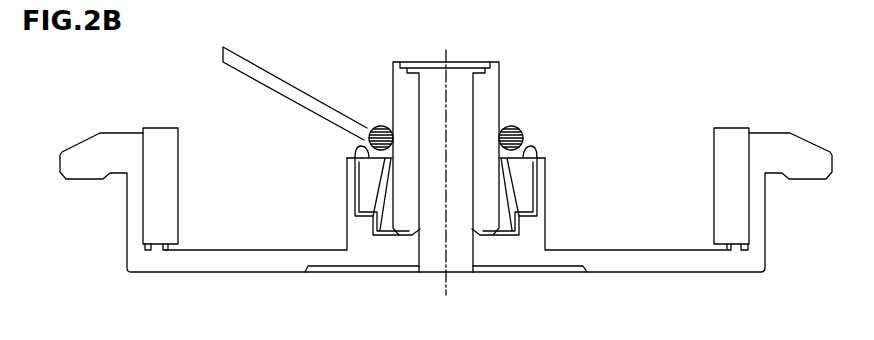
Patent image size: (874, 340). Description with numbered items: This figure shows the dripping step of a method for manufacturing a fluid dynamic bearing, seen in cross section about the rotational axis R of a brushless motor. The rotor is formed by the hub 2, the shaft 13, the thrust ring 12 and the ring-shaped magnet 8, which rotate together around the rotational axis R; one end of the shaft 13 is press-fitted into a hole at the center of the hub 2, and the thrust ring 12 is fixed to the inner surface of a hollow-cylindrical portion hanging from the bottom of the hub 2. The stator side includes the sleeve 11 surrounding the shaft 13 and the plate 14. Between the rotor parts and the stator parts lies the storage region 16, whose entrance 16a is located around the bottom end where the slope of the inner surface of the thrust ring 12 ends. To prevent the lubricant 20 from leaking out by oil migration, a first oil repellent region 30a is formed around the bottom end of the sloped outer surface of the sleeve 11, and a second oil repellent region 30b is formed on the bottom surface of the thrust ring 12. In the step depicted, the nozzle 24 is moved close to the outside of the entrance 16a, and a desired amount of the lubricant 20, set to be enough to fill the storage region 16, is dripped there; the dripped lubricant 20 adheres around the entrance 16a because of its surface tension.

The hub 2 is at (86, 143).
The ring-shaped magnet 8 is at (176, 148).
The sleeve 11 is at (397, 61).
The thrust ring 12 is at (362, 192).
The shaft 13 is at (432, 260).
The plate 14 is at (475, 63).
The storage region 16 is at (446, 231).
The entrance 16a is at (536, 164).
The lubricant 20 is at (452, 103).
The nozzle 24 is at (247, 67).
The first oil repellent region 30a is at (380, 124).
The second oil repellent region 30b is at (362, 149).
The rotational axis R is at (452, 288).